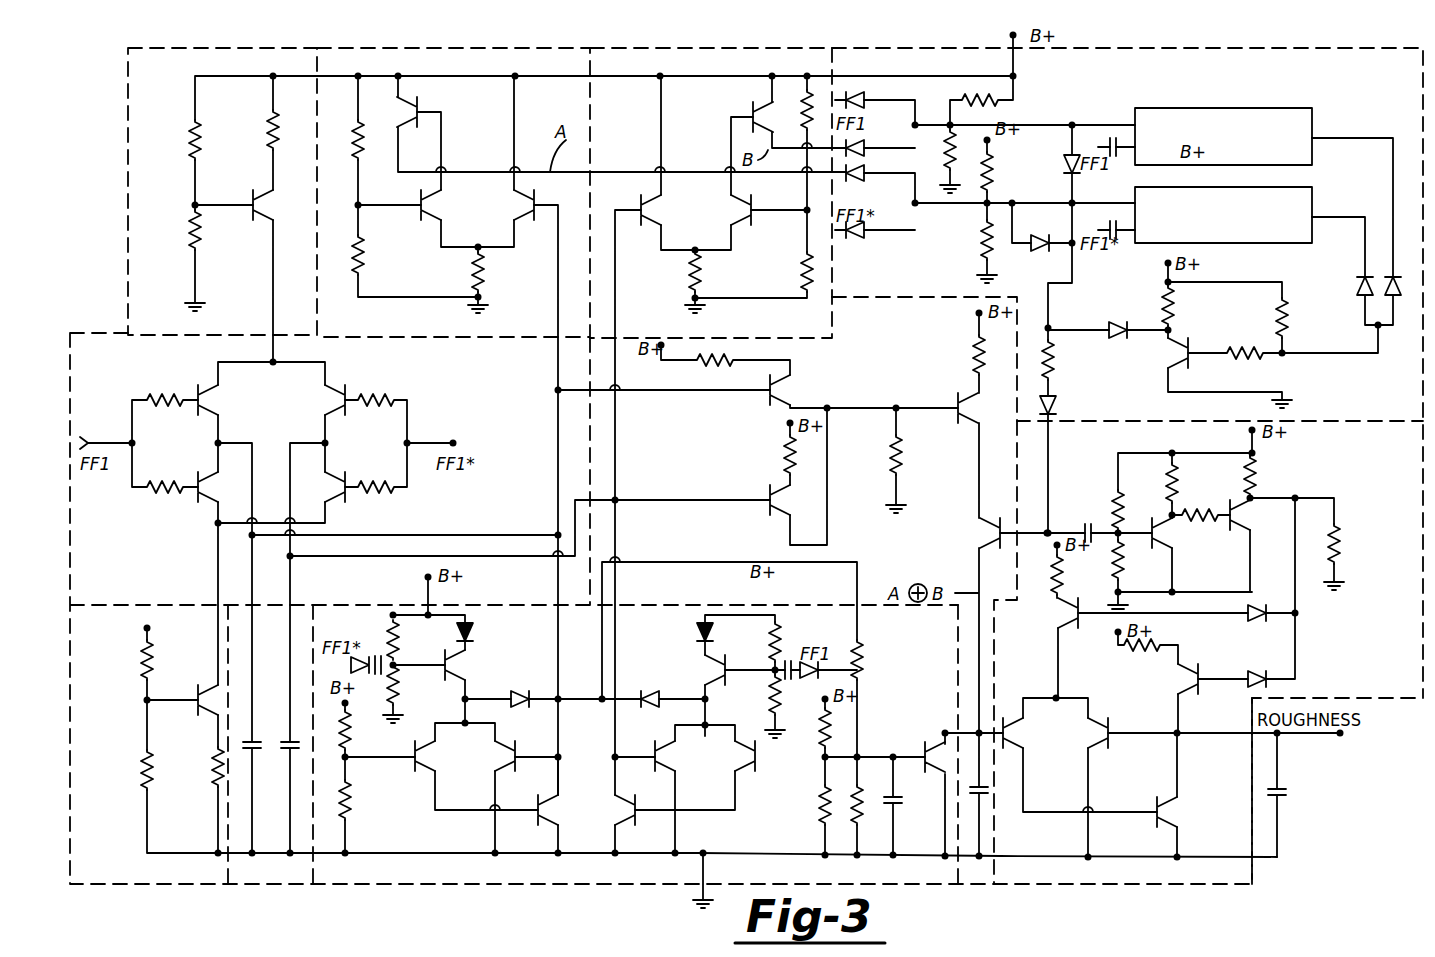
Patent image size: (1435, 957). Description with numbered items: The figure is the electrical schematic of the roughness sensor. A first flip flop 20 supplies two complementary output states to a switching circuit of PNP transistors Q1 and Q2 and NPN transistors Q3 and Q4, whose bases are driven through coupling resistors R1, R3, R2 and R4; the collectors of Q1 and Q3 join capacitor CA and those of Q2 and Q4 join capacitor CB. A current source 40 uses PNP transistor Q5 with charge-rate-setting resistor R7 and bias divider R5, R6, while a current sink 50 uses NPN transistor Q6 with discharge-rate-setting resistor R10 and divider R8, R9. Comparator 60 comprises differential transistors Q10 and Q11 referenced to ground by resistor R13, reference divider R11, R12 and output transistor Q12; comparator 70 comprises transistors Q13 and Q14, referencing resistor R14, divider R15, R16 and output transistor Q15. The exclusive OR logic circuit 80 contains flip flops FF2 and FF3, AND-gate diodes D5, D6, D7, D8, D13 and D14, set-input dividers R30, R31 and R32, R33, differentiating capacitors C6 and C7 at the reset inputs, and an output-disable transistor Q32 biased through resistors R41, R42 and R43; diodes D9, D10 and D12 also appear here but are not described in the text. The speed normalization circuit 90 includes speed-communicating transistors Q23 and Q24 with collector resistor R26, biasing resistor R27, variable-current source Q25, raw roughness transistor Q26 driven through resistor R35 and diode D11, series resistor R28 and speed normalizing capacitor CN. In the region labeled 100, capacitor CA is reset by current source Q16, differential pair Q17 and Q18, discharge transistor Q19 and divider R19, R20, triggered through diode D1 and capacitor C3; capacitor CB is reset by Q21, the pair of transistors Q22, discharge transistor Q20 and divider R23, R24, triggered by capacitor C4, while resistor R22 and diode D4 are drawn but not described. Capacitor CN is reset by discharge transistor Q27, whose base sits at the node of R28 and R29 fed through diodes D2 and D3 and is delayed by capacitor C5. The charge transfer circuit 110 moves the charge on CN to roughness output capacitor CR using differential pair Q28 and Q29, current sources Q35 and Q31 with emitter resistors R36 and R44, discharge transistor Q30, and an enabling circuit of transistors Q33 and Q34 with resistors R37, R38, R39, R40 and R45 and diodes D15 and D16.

The flip flop 20 is at (103, 358).
The current source 40 is at (255, 68).
The current sink 50 is at (128, 862).
The comparator 60 is at (513, 73).
The comparator 70 is at (772, 70).
The exclusive OR logic circuit 80 is at (1418, 70).
The speed normalization circuit 90 is at (905, 868).
The comparator section 100 is at (390, 866).
The charge transfer circuit 110 is at (1145, 860).
The voltage dividing biasing resistor R5 is at (174, 141).
The voltage dividing biasing resistor R6 is at (174, 230).
The charge rate setting resistor R7 is at (255, 131).
The current source transistor Q5 is at (269, 205).
The voltage dividing reference resistor R11 is at (345, 140).
The voltage dividing reference resistor R12 is at (378, 255).
The referencing resistor R13 is at (499, 272).
The NPN transistor Q10 is at (443, 205).
The NPN transistor Q11 is at (511, 205).
The output transistor Q12 is at (392, 111).
The NPN transistor Q13 is at (662, 210).
The NPN transistor Q14 is at (724, 210).
The output transistor Q15 is at (778, 117).
The referencing resistor R14 is at (674, 272).
The voltage dividing referencing resistor R15 is at (815, 120).
The voltage dividing referencing resistor R16 is at (790, 272).
The AND gate diode D5 is at (872, 96).
The AND gate diode D6 is at (874, 141).
The AND gate diode D7 is at (873, 182).
The AND gate diode D8 is at (874, 238).
The diode D9 is at (1059, 154).
The diode D10 is at (1035, 254).
The diode D11 is at (1070, 406).
The diode D12 is at (1122, 321).
The AND gate diode D13 is at (1347, 286).
The AND gate diode D14 is at (1407, 277).
The diode D15 is at (1247, 624).
The diode D16 is at (1266, 669).
The voltage dividing resistor R30 is at (975, 92).
The voltage dividing resistor R31 is at (935, 152).
The voltage dividing resistor R32 is at (1005, 172).
The voltage dividing resistor R33 is at (969, 240).
The resistor R35 is at (892, 363).
The biasing resistor R41 is at (1186, 306).
The coupling resistor R42 is at (1245, 344).
The resistor R43 is at (1300, 318).
The output-disable switch transistor Q32 is at (1166, 353).
The capacitor C6 is at (1108, 145).
The capacitor C7 is at (1108, 228).
The second flip flop FF2 is at (1223, 215).
The third flip flop FF3 is at (1223, 136).
The coupling resistor R1 is at (165, 388).
The coupling resistor R2 is at (376, 388).
The coupling resistor R3 is at (165, 477).
The coupling resistor R4 is at (375, 477).
The PNP transistor Q1 is at (216, 400).
The PNP transistor Q2 is at (323, 400).
The NPN transistor Q3 is at (213, 487).
The NPN transistor Q4 is at (322, 487).
The speed communicating transistor Q23 is at (799, 390).
The speed communicating transistor Q24 is at (791, 501).
The variable-current source transistor Q25 is at (982, 408).
The raw roughness transistor Q26 is at (979, 533).
The resistor R26 is at (769, 455).
The biasing resistor R27 is at (666, 547).
The resistor R28 is at (686, 522).
The biasing resistor R36 is at (1041, 575).
The voltage dividing resistor R37 is at (1105, 507).
The voltage dividing resistor R38 is at (1115, 560).
The coupling resistor R39 is at (1191, 483).
The voltage dividing resistor R40 is at (1269, 475).
The biasing resistor R44 is at (1127, 661).
The coupling resistor R45 is at (1284, 536).
The normally ON transistor Q33 is at (1169, 536).
The transfer circuit enabling transistor Q34 is at (1253, 515).
The current source transistor Q35 is at (1053, 614).
The current source transistor Q31 is at (1175, 679).
The PNP transistor Q28 is at (1026, 734).
The PNP transistor Q29 is at (1088, 734).
The discharge transistor Q30 is at (1180, 813).
The discharge transistor Q27 is at (945, 757).
The roughness output capacitor CR is at (1295, 791).
The speed normalizing capacitor CN is at (990, 803).
The capacitor C5 is at (906, 806).
The capacitor C4 is at (804, 651).
The capacitor C3 is at (364, 677).
The voltage dividing resistor R29 is at (817, 723).
The resistor R22 is at (759, 695).
The voltage dividing resistor R23 is at (809, 729).
The voltage dividing resistor R24 is at (806, 805).
The diode D4 is at (805, 693).
The diode D3 is at (648, 687).
The diode D2 is at (523, 686).
The diode D1 is at (368, 653).
The current source transistor Q21 is at (704, 654).
The differentially connected PNP transistor Q22 is at (705, 758).
The discharge transistor Q20 is at (610, 814).
The discharge transistor Q19 is at (559, 814).
The differentially connected PNP transistor Q18 is at (493, 757).
The differentially connected PNP transistor Q17 is at (435, 757).
The current source transistor Q16 is at (467, 651).
The voltage dividing resistor R19 is at (362, 730).
The voltage dividing resistor R20 is at (365, 800).
The capacitor CA is at (260, 732).
The capacitor CB is at (280, 761).
The base biasing voltage dividing resistor R8 is at (162, 660).
The base biasing voltage dividing resistor R9 is at (162, 770).
The discharge-rate-setting resistor R10 is at (212, 775).
The current sink transistor Q6 is at (212, 700).